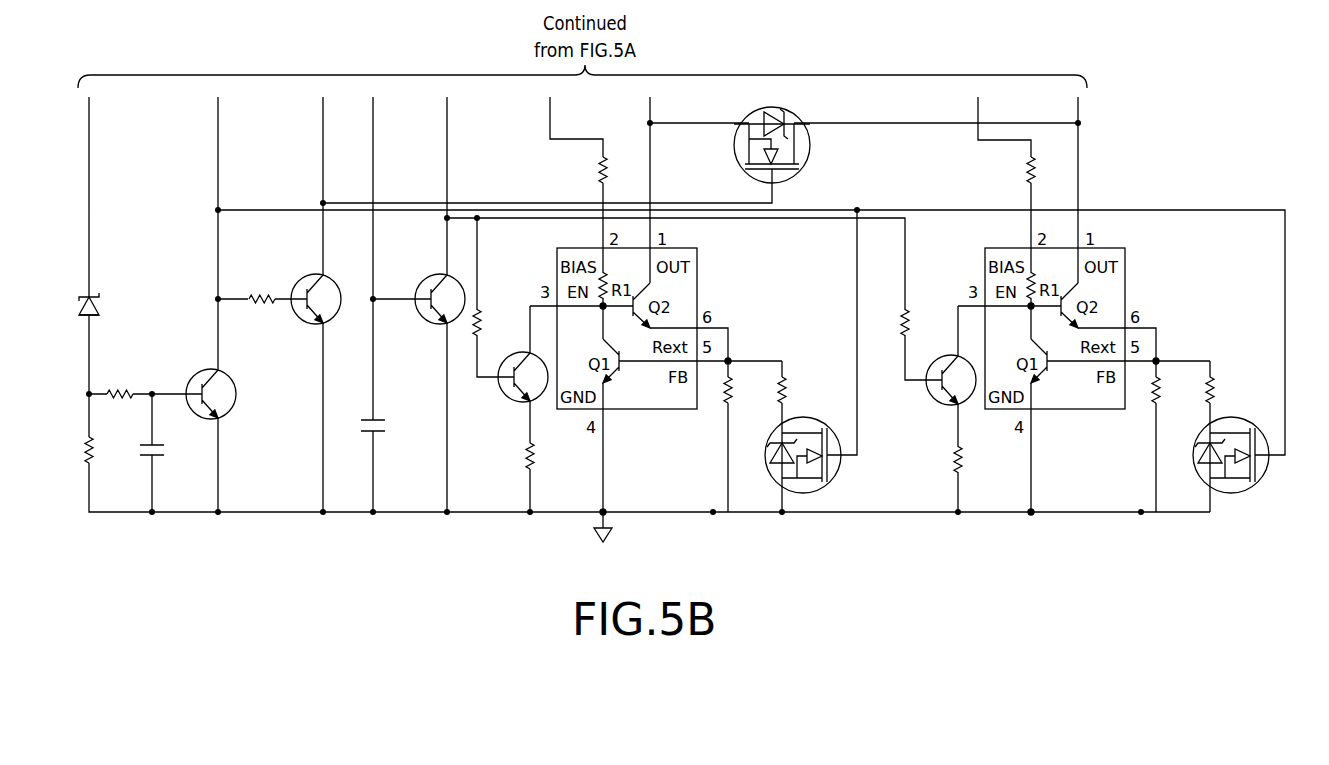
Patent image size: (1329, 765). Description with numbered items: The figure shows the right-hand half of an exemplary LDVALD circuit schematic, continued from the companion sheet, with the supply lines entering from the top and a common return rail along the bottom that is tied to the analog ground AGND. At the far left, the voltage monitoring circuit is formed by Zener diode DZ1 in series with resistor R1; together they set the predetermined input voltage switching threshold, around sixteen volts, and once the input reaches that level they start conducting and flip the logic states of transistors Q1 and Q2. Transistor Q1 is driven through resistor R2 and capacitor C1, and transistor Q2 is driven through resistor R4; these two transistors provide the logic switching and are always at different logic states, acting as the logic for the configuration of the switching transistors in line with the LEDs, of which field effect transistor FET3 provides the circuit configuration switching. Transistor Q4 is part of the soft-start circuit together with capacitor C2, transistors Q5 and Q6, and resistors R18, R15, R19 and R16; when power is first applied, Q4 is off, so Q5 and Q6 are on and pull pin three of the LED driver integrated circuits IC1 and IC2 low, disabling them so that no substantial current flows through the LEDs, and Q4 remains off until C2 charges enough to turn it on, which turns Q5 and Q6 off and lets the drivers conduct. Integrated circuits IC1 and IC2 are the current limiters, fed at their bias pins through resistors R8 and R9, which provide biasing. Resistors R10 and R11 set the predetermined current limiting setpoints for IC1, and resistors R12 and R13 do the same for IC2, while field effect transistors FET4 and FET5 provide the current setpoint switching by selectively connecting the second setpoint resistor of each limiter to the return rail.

The Zener diode DZ1 is at (70, 306).
The resistor R1 is at (102, 450).
The resistor R2 is at (120, 377).
The capacitor C1 is at (166, 454).
The transistor Q1 is at (227, 394).
The resistor R4 is at (262, 286).
The transistor Q2 is at (297, 304).
The transistor Q4 is at (421, 304).
The capacitor C2 is at (388, 431).
The resistor R18 is at (496, 323).
The transistor Q5 is at (505, 381).
The resistor R15 is at (549, 456).
The resistor R8 is at (587, 170).
The integrated circuit IC1 is at (656, 319).
The resistor R10 is at (747, 436).
The resistor R11 is at (802, 436).
The transistor FET3 is at (797, 145).
The transistor FET4 is at (827, 455).
The resistor R9 is at (1045, 170).
The resistor R19 is at (924, 318).
The transistor Q6 is at (933, 383).
The resistor R16 is at (977, 460).
The integrated circuit IC2 is at (1084, 319).
The resistor R12 is at (1175, 436).
The resistor R13 is at (1229, 436).
The transistor FET5 is at (1256, 455).
The analog ground AGND is at (603, 550).